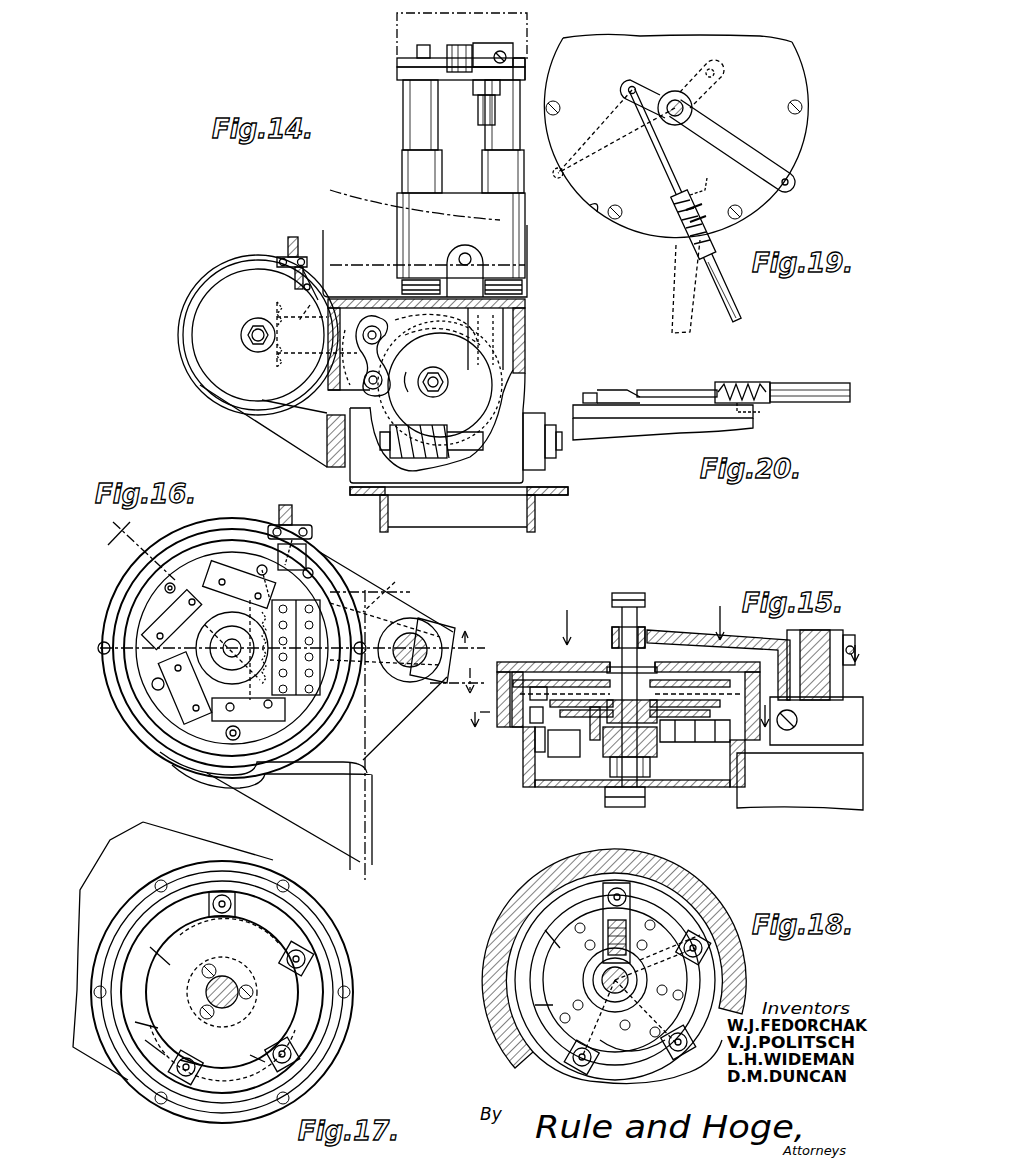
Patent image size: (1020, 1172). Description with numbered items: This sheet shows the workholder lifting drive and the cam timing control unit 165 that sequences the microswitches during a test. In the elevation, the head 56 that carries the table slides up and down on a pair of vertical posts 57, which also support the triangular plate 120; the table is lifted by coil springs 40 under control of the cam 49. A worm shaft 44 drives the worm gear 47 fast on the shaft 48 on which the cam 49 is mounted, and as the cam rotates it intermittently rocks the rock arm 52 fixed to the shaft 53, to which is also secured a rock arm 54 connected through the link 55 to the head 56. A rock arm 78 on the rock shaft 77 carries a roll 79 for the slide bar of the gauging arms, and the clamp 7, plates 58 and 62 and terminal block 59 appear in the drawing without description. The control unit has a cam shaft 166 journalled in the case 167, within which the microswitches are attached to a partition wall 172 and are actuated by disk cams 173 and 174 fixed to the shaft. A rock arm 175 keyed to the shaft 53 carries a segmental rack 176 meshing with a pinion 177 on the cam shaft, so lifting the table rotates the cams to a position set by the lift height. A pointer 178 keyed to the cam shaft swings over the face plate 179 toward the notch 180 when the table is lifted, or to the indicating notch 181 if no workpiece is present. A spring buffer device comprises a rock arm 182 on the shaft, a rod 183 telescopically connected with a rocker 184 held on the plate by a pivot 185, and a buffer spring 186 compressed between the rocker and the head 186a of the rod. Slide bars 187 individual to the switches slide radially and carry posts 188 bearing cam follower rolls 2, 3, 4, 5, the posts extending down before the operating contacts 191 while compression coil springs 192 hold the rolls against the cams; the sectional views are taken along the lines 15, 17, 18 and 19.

In FIG. 17, the cam follower roll 2 is at (230, 887).
In FIG. 18, the cam follower roll 2 is at (616, 874).
In FIG. 17, the cam follower roll 3 is at (200, 1068).
In FIG. 18, the cam follower roll 3 is at (566, 1044).
In FIG. 17, the cam follower roll 4 is at (316, 946).
In FIG. 18, the cam follower roll 4 is at (716, 932).
In FIG. 17, the cam follower roll 5 is at (312, 1056).
In FIG. 18, the cam follower roll 5 is at (656, 1063).
In FIG. 14, the clamp 7 is at (282, 262).
In FIG. 16, the section line 15— 15 is at (296, 582).
In FIG. 16, the section line 17— 17 is at (457, 681).
In FIG. 15, the section line 17— 17 is at (853, 662).
In FIG. 15, the section line 18— 18 is at (618, 725).
In FIG. 15, the section line 19— 19 is at (644, 617).
In FIG. 14, the coil springs 40 is at (520, 287).
In FIG. 14, the worm shaft 44 is at (562, 445).
In FIG. 14, the worm gear 47 is at (398, 418).
In FIG. 14, the shaft 48 is at (446, 383).
In FIG. 14, the cam 49 is at (435, 345).
In FIG. 14, the rock arm 52 is at (355, 357).
In FIG. 16, the rock arm 52 is at (239, 585).
In FIG. 14, the shaft 53 is at (372, 326).
In FIG. 16, the shaft 53 is at (425, 635).
In FIG. 15, the shaft 53 is at (815, 642).
In FIG. 14, the rock arm 54 is at (412, 332).
In FIG. 16, the rock arm 54 is at (172, 620).
In FIG. 15, the rock arm 54 is at (563, 750).
In FIG. 14, the link 55 is at (470, 275).
In FIG. 16, the link 55 is at (182, 688).
In FIG. 14, the head 56 is at (510, 207).
In FIG. 14, the vertical posts 57 is at (487, 138).
In FIG. 14, the top plate 58 is at (405, 63).
In FIG. 16, the terminal block 59 is at (266, 670).
In FIG. 14, the plate 62 is at (405, 76).
In FIG. 14, the rock shaft 77 is at (500, 44).
In FIG. 14, the rock arm 78 is at (462, 46).
In FIG. 14, the roll 79 is at (463, 70).
In FIG. 14, the triangular plate 120 is at (527, 72).
In FIG. 14, the cam timing control unit 165 is at (258, 318).
In FIG. 14, the cam shaft 166 is at (253, 335).
In FIG. 19, the cam shaft 166 is at (676, 98).
In FIG. 16, the cam shaft 166 is at (232, 643).
In FIG. 15, the cam shaft 166 is at (645, 612).
In FIG. 17, the cam shaft 166 is at (237, 985).
In FIG. 18, the cam shaft 166 is at (602, 982).
In FIG. 14, the case 167 is at (205, 291).
In FIG. 16, the case 167 is at (160, 588).
In FIG. 15, the case 167 is at (524, 765).
In FIG. 17, the case 167 is at (160, 913).
In FIG. 18, the case 167 is at (520, 902).
In FIG. 15, the partition wall 172 is at (745, 745).
In FIG. 15, the disk cam 173 is at (560, 698).
In FIG. 17, the disk cam 173 is at (152, 1006).
In FIG. 15, the disk cam 174 is at (575, 708).
In FIG. 17, the disk cam 174 is at (215, 1045).
In FIG. 14, the rock arm 175 is at (300, 305).
In FIG. 16, the rock arm 175 is at (385, 617).
In FIG. 15, the rock arm 175 is at (678, 636).
In FIG. 14, the segmental rack 176 is at (272, 315).
In FIG. 16, the segmental rack 176 is at (235, 650).
In FIG. 15, the pinion 177 is at (615, 637).
In FIG. 19, the pointer 178 is at (740, 143).
In FIG. 15, the pointer 178 is at (660, 652).
In FIG. 19, the face plate 179 is at (802, 138).
In FIG. 20, the face plate 179 is at (685, 414).
In FIG. 15, the face plate 179 is at (735, 662).
In FIG. 19, the notch 180 is at (560, 166).
In FIG. 19, the indicating notch 181 is at (597, 207).
In FIG. 19, the rock arm 182 is at (636, 82).
In FIG. 20, the rock arm 182 is at (605, 390).
In FIG. 19, the rod 183 is at (665, 170).
In FIG. 20, the rod 183 is at (687, 390).
In FIG. 19, the rocker 184 is at (737, 285).
In FIG. 20, the rocker 184 is at (815, 388).
In FIG. 19, the pivot 185 is at (708, 210).
In FIG. 20, the pivot 185 is at (762, 412).
In FIG. 19, the buffer spring 186 is at (690, 226).
In FIG. 20, the buffer spring 186 is at (740, 385).
In FIG. 19, the head 186a is at (718, 246).
In FIG. 15, the slide bars 187 is at (537, 716).
In FIG. 17, the slide bars 187 is at (210, 912).
In FIG. 18, the slide bars 187 is at (603, 908).
In FIG. 16, the posts 188 is at (190, 590).
In FIG. 15, the posts 188 is at (535, 700).
In FIG. 17, the posts 188 is at (283, 1050).
In FIG. 18, the posts 188 is at (657, 1043).
In FIG. 16, the operating contacts 191 is at (175, 586).
In FIG. 15, the operating contacts 191 is at (540, 748).
In FIG. 15, the compression coil springs 192 is at (592, 738).
In FIG. 18, the compression coil springs 192 is at (638, 920).